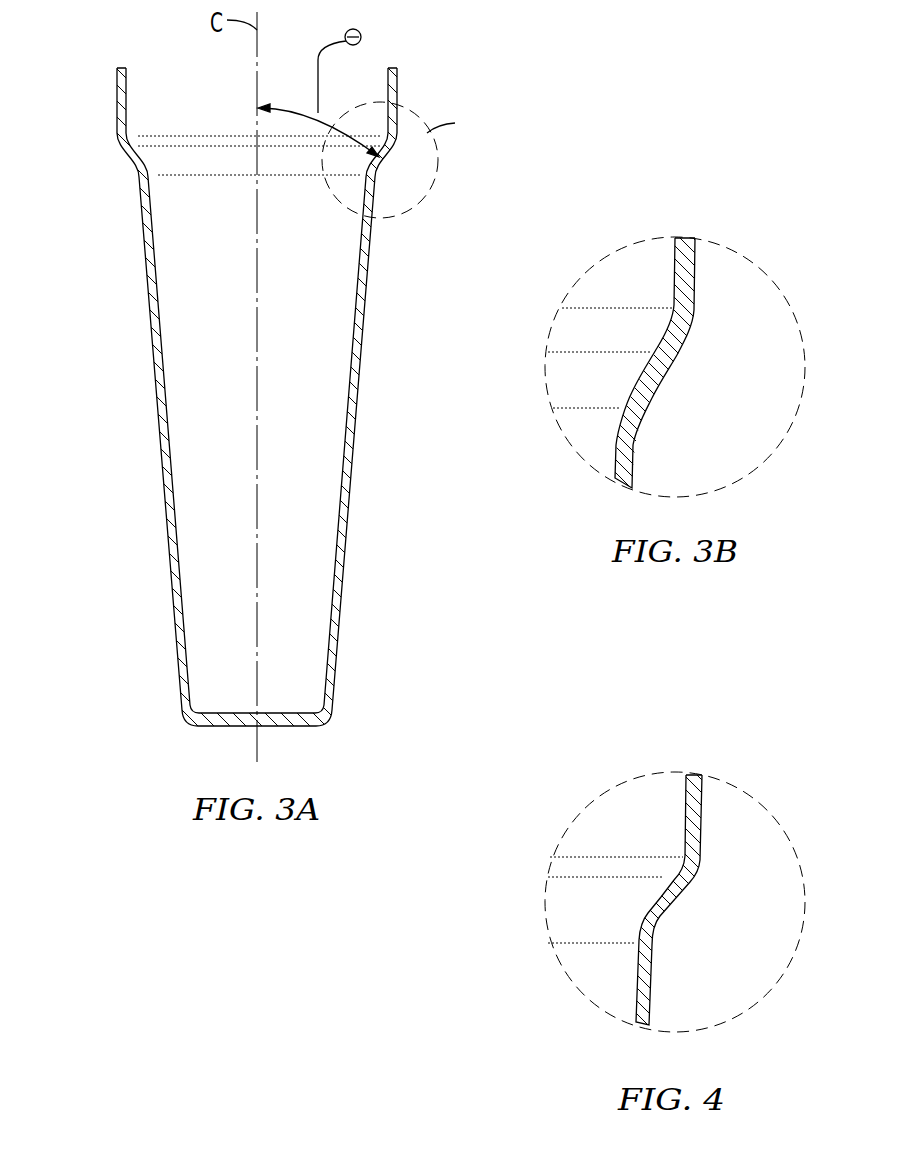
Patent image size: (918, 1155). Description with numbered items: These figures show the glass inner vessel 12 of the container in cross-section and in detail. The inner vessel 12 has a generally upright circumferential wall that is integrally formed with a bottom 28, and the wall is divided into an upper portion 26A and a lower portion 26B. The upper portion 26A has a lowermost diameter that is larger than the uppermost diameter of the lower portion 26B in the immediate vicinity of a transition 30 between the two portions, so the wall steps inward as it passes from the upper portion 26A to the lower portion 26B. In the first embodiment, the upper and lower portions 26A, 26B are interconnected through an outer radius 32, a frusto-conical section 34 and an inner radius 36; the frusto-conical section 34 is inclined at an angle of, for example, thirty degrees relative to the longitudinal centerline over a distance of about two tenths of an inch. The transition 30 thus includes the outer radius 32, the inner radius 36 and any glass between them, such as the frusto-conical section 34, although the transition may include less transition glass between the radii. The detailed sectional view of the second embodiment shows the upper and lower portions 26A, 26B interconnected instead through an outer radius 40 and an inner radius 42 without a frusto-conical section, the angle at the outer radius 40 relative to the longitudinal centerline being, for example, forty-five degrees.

In FIG. 3A, the inner vessel 12 is at (428, 67).
In FIG. 3A, the upper portion 26A is at (117, 105).
In FIG. 3B, the upper portion 26A is at (695, 278).
In FIG. 4, the upper portion 26A is at (702, 822).
In FIG. 3A, the lower portion 26B is at (153, 385).
In FIG. 3B, the lower portion 26B is at (634, 462).
In FIG. 4, the lower portion 26B is at (651, 990).
In FIG. 3A, the bottom 28 is at (203, 727).
In FIG. 3A, the transition 30 is at (390, 167).
In FIG. 3B, the transition 30 is at (709, 410).
In FIG. 3B, the outer radius 32 is at (692, 336).
In FIG. 3B, the frusto-conical section 34 is at (665, 377).
In FIG. 3B, the inner radius 36 is at (640, 431).
In FIG. 4, the outer radius 40 is at (690, 884).
In FIG. 4, the inner radius 42 is at (646, 916).